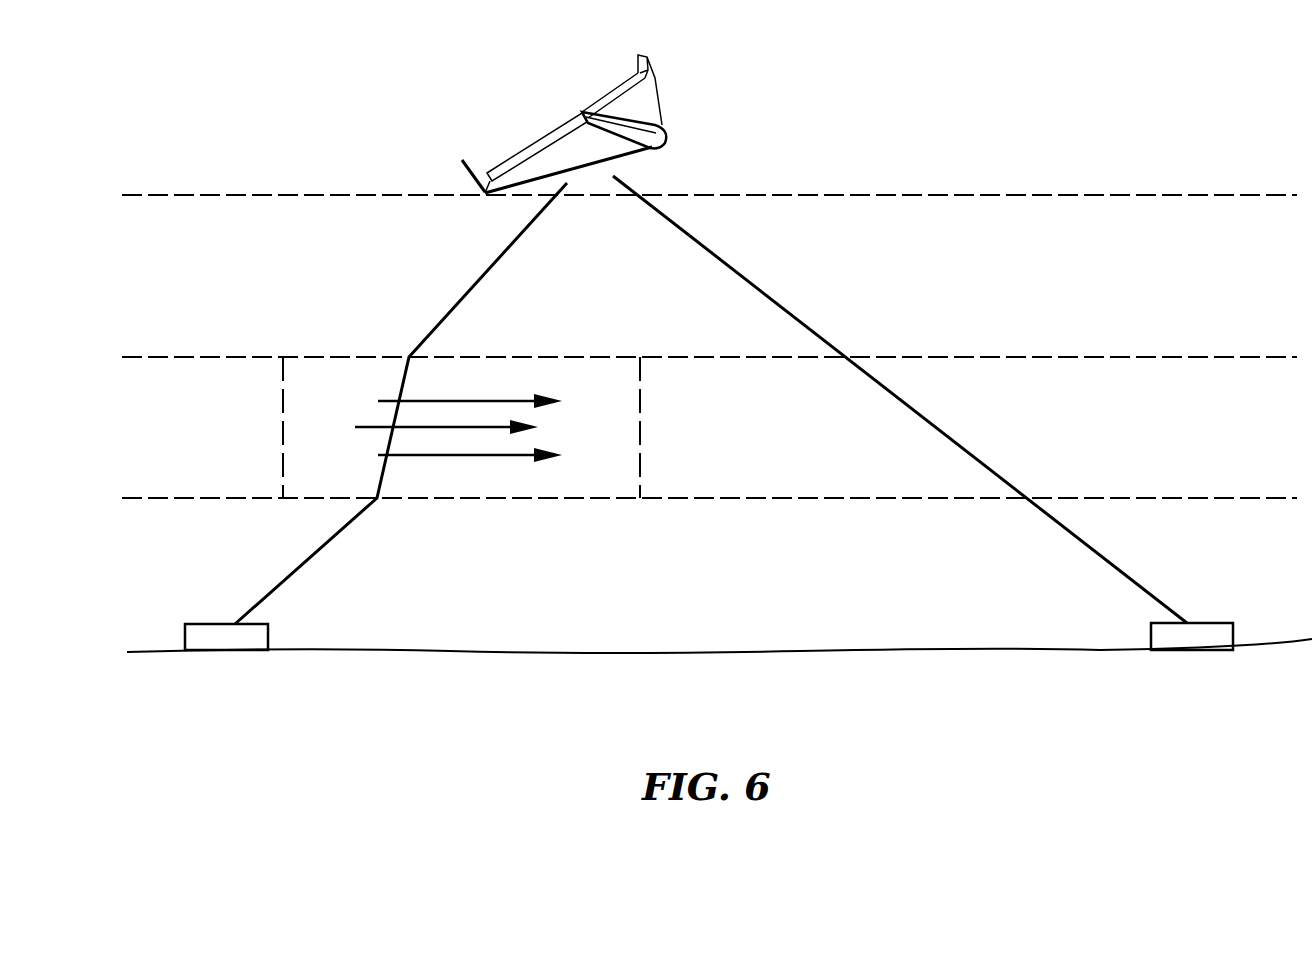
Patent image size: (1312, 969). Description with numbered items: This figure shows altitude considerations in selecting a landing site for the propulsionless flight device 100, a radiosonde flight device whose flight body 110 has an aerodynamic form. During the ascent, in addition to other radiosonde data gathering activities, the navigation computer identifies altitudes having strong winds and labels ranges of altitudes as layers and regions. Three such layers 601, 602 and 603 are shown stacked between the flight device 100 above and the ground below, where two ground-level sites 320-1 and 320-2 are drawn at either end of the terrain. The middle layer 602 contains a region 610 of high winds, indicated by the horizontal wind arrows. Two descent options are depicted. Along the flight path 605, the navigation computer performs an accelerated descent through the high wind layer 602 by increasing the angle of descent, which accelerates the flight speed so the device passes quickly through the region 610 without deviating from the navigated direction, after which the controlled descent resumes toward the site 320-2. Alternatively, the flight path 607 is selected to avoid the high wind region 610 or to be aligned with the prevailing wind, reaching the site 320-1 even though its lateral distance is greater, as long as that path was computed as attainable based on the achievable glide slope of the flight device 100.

The propulsionless flight device 100 is at (564, 99).
The flight body 110 is at (582, 113).
The first ground station 320-1 is at (1180, 630).
The second ground station 320-2 is at (218, 637).
The layer 601 is at (1283, 283).
The layer 602 is at (1285, 435).
The layer 603 is at (1285, 582).
The flight path 605 is at (483, 268).
The flight path 607 is at (767, 282).
The region of high winds 610 is at (618, 440).